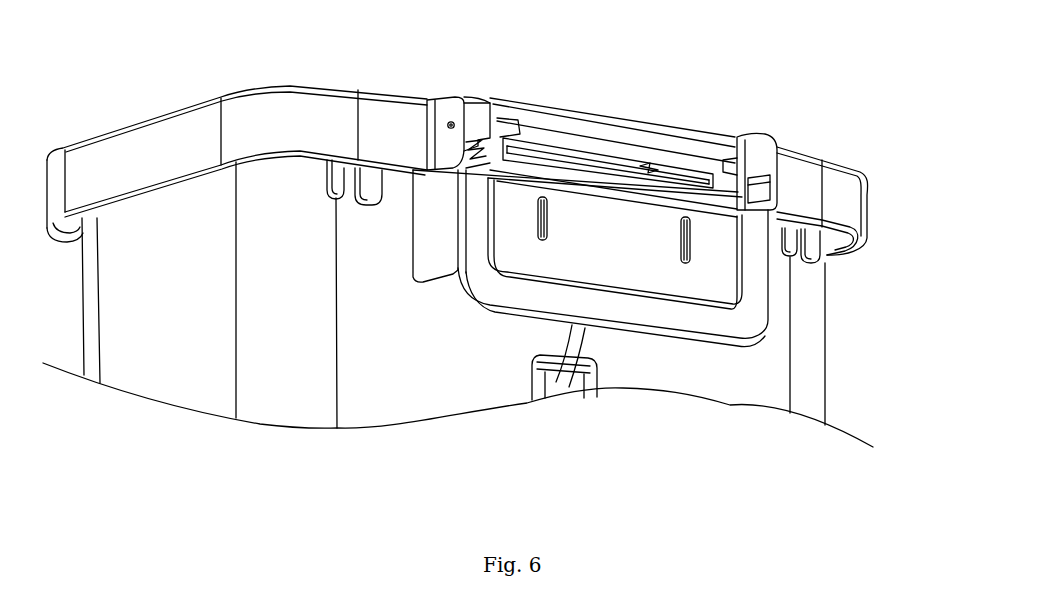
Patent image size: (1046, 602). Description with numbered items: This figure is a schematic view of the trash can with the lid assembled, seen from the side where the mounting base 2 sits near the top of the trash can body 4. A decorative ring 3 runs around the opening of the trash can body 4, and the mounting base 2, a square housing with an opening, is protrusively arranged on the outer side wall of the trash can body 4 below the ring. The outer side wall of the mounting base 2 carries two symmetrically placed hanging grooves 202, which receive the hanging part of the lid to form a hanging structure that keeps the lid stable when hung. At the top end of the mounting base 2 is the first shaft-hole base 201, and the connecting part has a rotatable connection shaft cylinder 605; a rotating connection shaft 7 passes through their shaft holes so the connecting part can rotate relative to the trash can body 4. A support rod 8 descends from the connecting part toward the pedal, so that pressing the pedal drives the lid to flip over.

The mounting base 2 is at (706, 336).
The decorative ring 3 is at (135, 153).
The trash can body 4 is at (205, 378).
The rotating connection shaft 7 is at (450, 122).
The support rod 8 is at (560, 387).
The first shaft-hole base 201 is at (752, 157).
The hanging groove 202 is at (547, 240).
The rotatable connection shaft cylinder 605 is at (737, 140).